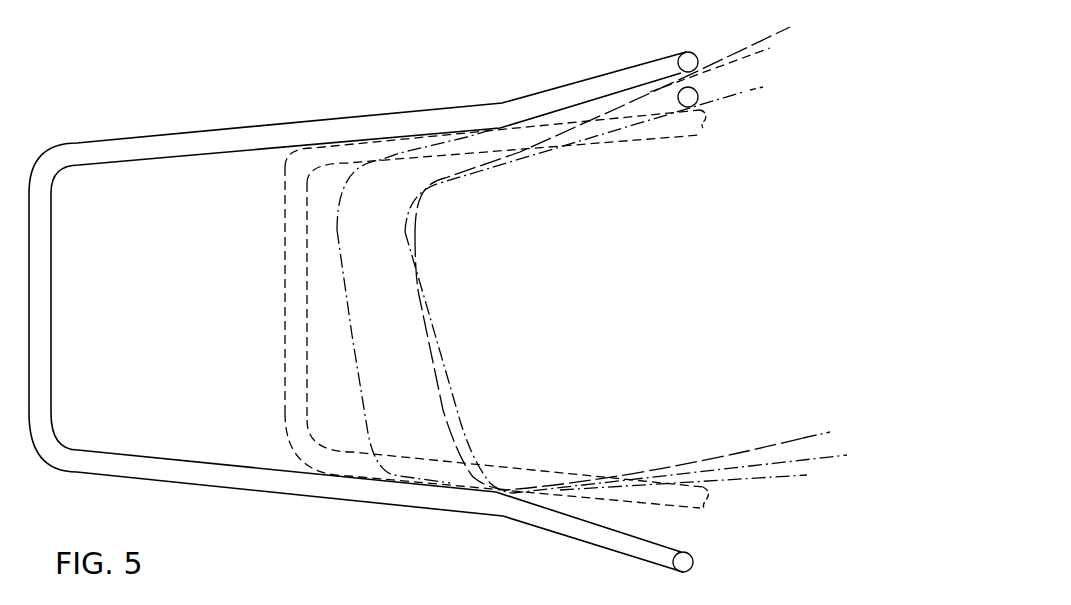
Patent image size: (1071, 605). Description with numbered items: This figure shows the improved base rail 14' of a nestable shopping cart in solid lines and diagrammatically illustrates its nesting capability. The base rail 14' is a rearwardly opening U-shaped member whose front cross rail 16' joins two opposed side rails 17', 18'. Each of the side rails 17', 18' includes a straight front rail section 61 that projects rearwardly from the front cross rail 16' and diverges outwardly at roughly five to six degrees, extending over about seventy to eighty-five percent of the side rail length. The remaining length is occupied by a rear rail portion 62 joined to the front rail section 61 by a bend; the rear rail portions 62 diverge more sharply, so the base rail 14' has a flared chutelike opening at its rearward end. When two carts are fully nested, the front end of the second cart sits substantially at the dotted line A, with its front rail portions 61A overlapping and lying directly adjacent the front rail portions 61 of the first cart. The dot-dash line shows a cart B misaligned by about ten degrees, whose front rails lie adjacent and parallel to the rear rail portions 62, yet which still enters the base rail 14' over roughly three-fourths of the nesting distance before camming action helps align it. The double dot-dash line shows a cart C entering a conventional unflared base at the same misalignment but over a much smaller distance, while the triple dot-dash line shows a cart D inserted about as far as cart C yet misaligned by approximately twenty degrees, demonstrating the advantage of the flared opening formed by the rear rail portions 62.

The front rail section 61 is at (231, 134).
The front rail portions of the other cart 61A is at (312, 163).
The rear rail portion 62 is at (656, 68).
The front cross rail 16' is at (77, 296).
The side rail 17' is at (338, 89).
The side rail 18' is at (407, 533).
The base rail 14' is at (244, 552).
The dotted line A is at (279, 254).
The cart B is at (346, 339).
The cart C is at (432, 394).
The cart D is at (470, 423).